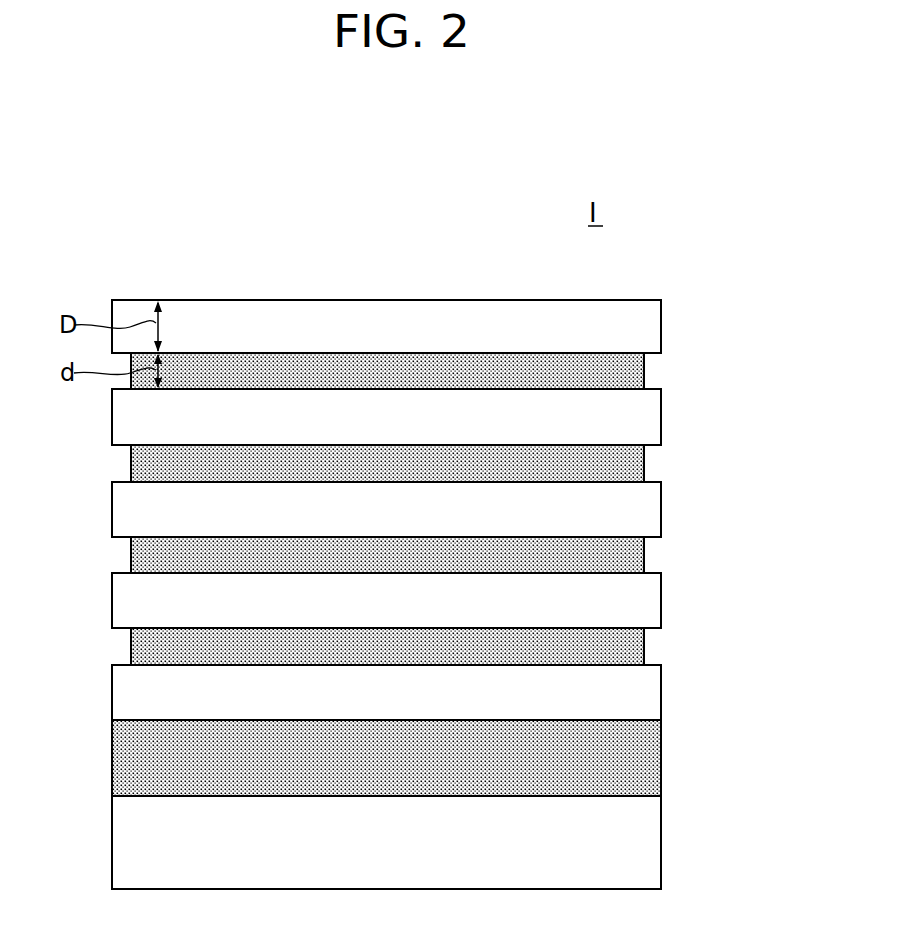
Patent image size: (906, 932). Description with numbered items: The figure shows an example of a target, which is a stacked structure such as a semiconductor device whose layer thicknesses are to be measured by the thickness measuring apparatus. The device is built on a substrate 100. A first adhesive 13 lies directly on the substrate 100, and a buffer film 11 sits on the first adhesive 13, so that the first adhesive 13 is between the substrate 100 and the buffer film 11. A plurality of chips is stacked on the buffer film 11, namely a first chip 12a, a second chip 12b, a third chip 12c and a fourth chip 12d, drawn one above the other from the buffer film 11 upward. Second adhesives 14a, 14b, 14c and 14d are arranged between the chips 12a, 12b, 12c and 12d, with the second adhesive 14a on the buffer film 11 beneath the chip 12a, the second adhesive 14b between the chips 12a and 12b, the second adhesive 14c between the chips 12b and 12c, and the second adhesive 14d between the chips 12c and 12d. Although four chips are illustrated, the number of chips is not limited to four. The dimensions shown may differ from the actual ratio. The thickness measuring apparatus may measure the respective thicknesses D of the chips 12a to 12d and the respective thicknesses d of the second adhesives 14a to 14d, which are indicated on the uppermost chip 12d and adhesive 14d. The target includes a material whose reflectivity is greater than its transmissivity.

The chip 12d is at (662, 322).
The second adhesive 14d is at (645, 370).
The chip 12c is at (662, 415).
The second adhesive 14c is at (645, 462).
The chip 12b is at (662, 507).
The second adhesive 14b is at (645, 553).
The chip 12a is at (662, 600).
The second adhesive 14a is at (645, 645).
The buffer film 11 is at (662, 690).
The first adhesive 13 is at (662, 755).
The substrate 100 is at (662, 840).